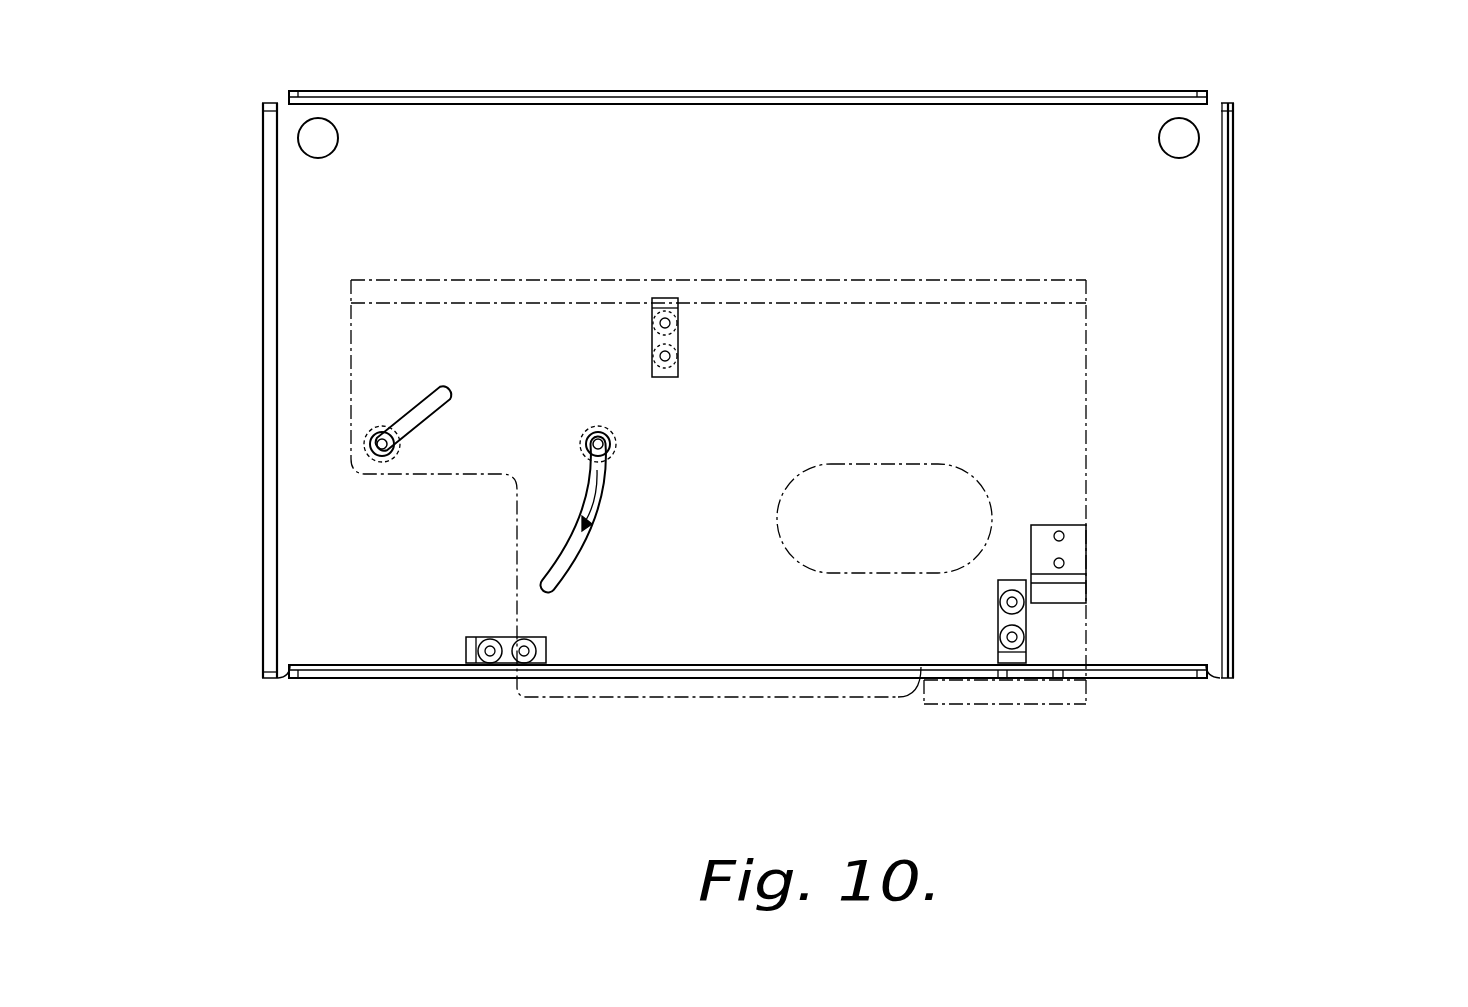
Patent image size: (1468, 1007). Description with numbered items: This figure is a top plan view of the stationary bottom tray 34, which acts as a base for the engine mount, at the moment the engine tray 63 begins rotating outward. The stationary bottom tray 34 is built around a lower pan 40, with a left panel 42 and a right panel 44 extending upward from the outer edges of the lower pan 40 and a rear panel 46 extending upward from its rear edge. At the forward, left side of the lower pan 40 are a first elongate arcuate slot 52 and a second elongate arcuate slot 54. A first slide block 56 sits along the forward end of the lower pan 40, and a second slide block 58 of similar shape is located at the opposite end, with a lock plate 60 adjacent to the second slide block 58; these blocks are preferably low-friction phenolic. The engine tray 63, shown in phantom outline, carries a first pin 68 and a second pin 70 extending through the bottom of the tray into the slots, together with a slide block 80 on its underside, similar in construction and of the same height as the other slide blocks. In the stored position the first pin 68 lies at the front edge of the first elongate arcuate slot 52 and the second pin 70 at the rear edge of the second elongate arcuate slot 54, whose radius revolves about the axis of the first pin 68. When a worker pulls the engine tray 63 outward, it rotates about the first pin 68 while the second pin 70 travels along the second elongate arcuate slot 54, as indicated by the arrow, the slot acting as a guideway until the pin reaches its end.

The stationary bottom tray 34 is at (805, 353).
The lower pan 40 is at (1095, 203).
The left panel 42 is at (263, 358).
The right panel 44 is at (1233, 362).
The rear panel 46 is at (735, 91).
The first elongate arcuate slot 52 is at (420, 405).
The second elongate arcuate slot 54 is at (607, 517).
The first slide block 56 is at (540, 652).
The second slide block 58 is at (1000, 618).
The lock plate 60 is at (1078, 548).
The engine tray 63 is at (497, 280).
The first pin 68 is at (402, 450).
The second pin 70 is at (617, 433).
The slide block 80 is at (678, 342).